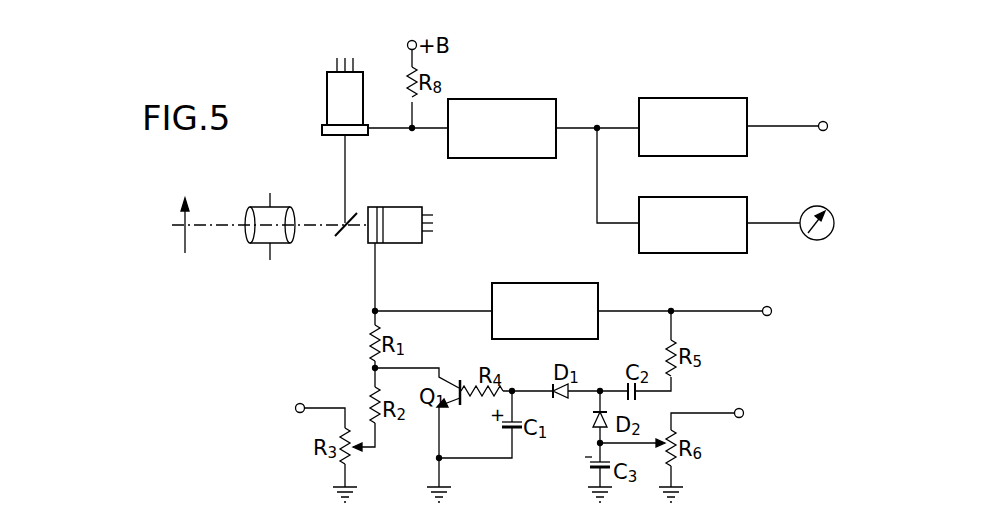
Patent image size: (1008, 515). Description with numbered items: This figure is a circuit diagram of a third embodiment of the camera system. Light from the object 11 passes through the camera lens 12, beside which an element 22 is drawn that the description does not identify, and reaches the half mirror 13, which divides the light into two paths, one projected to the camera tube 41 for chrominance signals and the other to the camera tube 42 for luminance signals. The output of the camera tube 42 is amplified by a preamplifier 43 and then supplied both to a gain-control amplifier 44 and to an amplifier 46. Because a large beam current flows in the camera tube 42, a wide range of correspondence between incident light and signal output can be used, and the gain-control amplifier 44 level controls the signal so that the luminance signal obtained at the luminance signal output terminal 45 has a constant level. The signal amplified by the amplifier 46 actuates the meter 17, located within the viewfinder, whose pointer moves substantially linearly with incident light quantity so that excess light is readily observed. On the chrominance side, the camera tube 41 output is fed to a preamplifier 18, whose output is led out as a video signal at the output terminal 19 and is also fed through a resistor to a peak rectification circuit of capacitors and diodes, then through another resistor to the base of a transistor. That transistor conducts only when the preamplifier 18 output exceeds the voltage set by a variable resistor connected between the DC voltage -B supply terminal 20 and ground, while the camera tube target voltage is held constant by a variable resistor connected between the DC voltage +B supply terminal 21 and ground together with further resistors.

The object 11 is at (188, 206).
The camera lens 12 is at (284, 207).
The half mirror 13 is at (338, 239).
The meter 17 is at (822, 206).
The preamplifier 18 is at (542, 283).
The output terminal 19 is at (768, 305).
The DC voltage -B supply terminal 20 is at (742, 408).
The DC voltage +B supply terminal 21 is at (300, 403).
The aperture stop 22 is at (271, 257).
The camera tube for chrominance signals 41 is at (403, 207).
The camera tube for luminance signals 42 is at (327, 93).
The preamplifier 43 is at (508, 99).
The gain-control amplifier 44 is at (693, 98).
The luminance signal output terminal 45 is at (822, 121).
The amplifier 46 is at (722, 197).